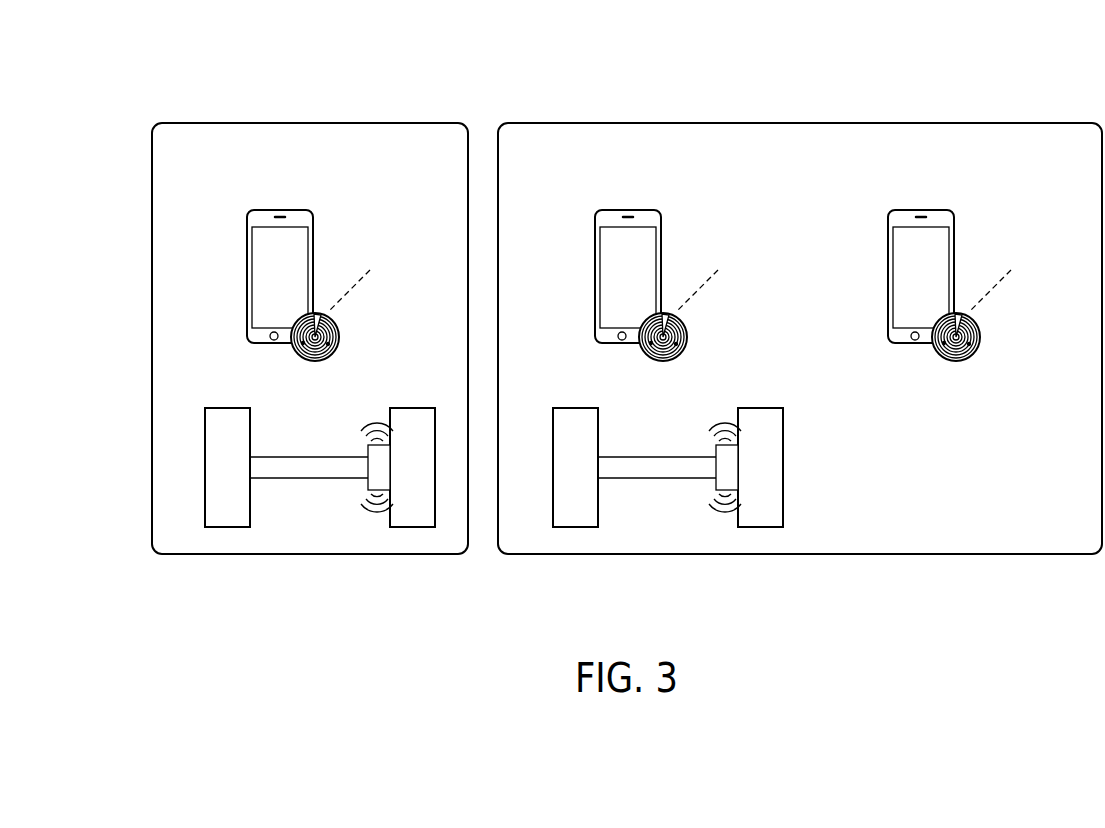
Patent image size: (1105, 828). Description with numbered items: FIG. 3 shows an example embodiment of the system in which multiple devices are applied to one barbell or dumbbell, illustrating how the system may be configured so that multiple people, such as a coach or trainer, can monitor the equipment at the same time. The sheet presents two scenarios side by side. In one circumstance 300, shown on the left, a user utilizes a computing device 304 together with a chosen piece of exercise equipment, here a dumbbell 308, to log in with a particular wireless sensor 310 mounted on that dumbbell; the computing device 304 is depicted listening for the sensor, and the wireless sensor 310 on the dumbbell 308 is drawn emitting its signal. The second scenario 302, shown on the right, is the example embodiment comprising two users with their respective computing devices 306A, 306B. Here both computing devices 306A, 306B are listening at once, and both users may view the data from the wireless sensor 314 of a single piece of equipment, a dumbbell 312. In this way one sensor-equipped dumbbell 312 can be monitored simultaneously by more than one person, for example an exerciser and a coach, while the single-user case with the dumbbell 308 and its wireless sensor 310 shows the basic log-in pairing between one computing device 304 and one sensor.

The circumstance 300 is at (312, 123).
The second environment 302 is at (806, 123).
The computing device 304 is at (248, 265).
The computing device 306A is at (627, 210).
The computing device 306B is at (920, 210).
The dumbbell 308 is at (227, 528).
The wireless sensor 310 is at (378, 492).
The dumbbell 312 is at (573, 528).
The wireless sensor 314 is at (722, 492).